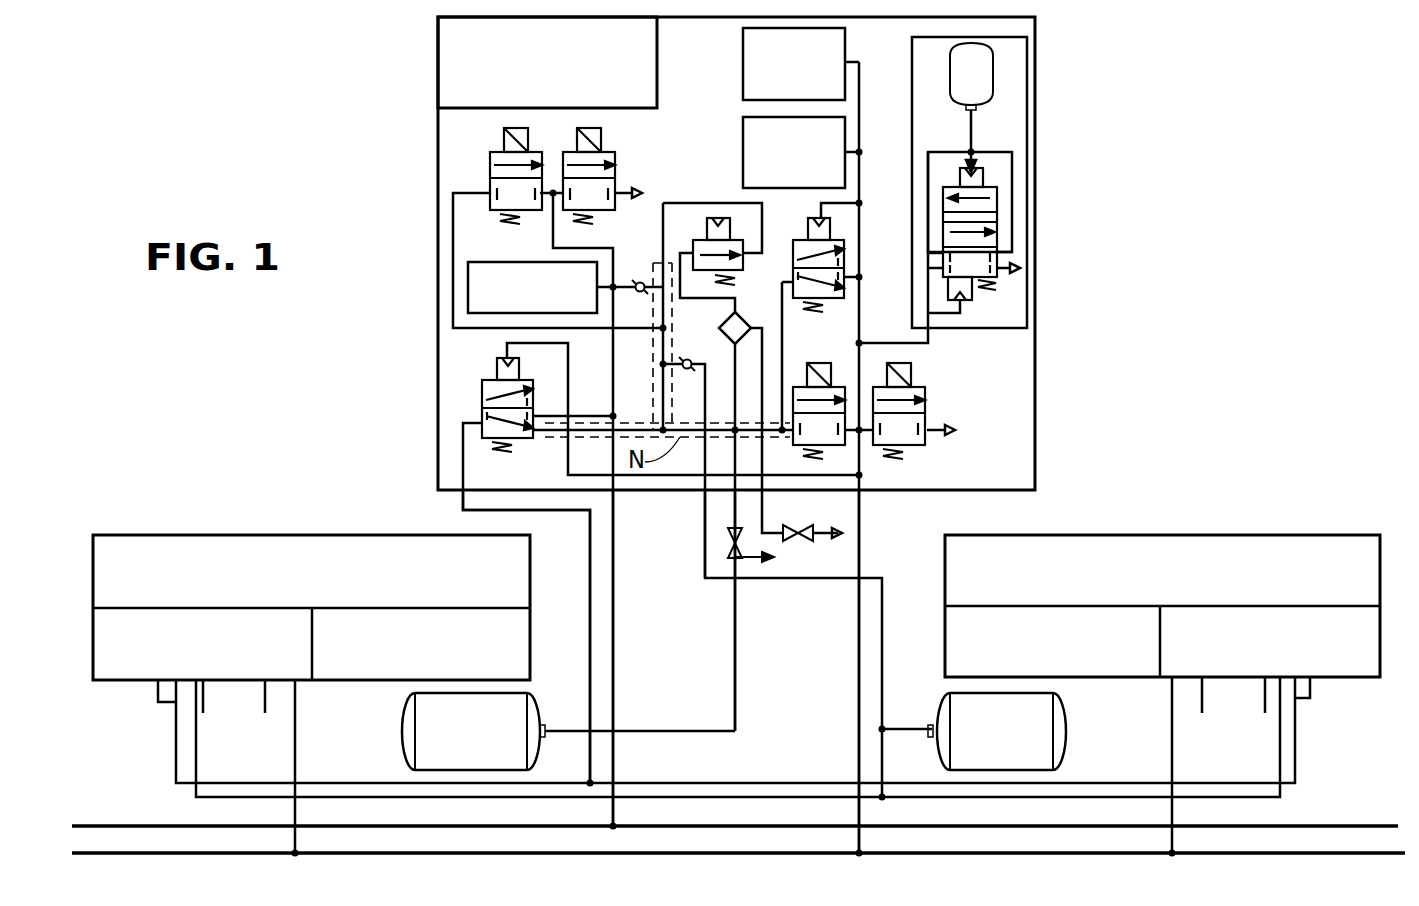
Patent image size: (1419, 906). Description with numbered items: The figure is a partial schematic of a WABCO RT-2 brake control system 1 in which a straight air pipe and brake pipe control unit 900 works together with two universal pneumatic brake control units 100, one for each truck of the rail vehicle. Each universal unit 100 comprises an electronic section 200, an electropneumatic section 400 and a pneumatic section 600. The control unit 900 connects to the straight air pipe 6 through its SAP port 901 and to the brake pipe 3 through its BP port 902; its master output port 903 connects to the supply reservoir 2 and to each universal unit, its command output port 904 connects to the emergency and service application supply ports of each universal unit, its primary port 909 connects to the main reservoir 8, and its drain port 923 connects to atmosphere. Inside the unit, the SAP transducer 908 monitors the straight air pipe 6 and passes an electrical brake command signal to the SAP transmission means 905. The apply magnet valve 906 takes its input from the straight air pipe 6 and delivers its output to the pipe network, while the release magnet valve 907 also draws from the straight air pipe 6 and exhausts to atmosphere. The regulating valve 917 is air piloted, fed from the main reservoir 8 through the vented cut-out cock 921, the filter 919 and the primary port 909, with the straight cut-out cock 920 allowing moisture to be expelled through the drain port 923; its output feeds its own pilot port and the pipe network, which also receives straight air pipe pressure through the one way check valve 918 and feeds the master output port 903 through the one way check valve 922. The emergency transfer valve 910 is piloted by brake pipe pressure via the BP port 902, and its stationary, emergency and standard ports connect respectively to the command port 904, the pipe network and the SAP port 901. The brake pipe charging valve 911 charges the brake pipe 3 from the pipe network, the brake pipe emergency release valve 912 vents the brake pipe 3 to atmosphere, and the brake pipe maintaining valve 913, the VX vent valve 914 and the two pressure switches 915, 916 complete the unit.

The brake control system 1 is at (1125, 251).
The supply reservoir 2 is at (957, 710).
The brake pipe 3 is at (177, 853).
The straight air pipe 6 is at (88, 826).
The main reservoir 8 is at (530, 708).
The universal pneumatic brake control unit 100 is at (188, 510).
The electronic section 200 is at (304, 535).
The electropneumatic section 400 is at (360, 682).
The pneumatic section 600 is at (122, 682).
The straight air pipe and brake pipe control unit 900 is at (438, 178).
The straight air pipe port 901 is at (613, 494).
The brake pipe port 902 is at (861, 492).
The master output port 903 is at (706, 494).
The command output port 904 is at (463, 496).
The SAP transmission means 905 is at (448, 70).
The apply magnet valve 906 is at (503, 150).
The release magnet valve 907 is at (604, 150).
The SAP transducer 908 is at (468, 290).
The primary port 909 is at (733, 493).
The emergency transfer valve 910 is at (499, 370).
The brake pipe charging valve 911 is at (843, 386).
The brake pipe emergency release valve 912 is at (912, 386).
The brake pipe maintaining valve 913 is at (805, 218).
The VX vent valve 914 is at (1017, 108).
The pressure switch 915 is at (743, 128).
The pressure switch 916 is at (743, 62).
The regulating valve 917 is at (700, 243).
The one way check valve 918 is at (637, 283).
The filter 919 is at (745, 313).
The straight cut-out cock 920 is at (840, 534).
The vented cut-out cock 921 is at (742, 535).
The one way check valve 922 is at (687, 358).
The drain port 923 is at (767, 493).